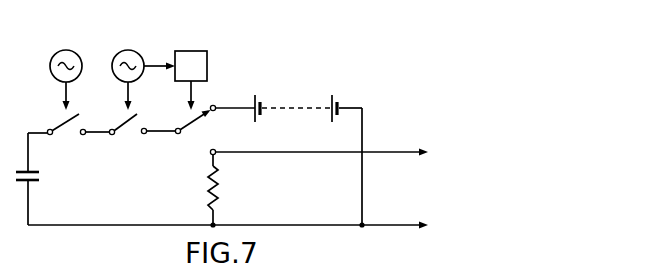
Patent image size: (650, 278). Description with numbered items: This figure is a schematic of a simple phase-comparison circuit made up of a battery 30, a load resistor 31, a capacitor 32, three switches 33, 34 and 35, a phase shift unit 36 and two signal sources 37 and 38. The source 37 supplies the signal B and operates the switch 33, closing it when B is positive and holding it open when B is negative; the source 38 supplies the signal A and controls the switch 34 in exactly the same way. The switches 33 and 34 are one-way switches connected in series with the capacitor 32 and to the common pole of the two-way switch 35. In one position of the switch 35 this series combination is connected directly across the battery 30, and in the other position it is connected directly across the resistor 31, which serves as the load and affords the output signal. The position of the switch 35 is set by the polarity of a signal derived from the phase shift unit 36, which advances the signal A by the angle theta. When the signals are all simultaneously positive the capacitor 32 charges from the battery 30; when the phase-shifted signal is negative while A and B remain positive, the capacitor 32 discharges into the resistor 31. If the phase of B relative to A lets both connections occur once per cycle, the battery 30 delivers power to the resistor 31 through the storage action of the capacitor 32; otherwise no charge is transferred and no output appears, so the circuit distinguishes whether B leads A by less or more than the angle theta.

The battery 30 is at (309, 99).
The resistor 31 is at (240, 193).
The capacitor 32 is at (61, 185).
The switch 33 is at (81, 152).
The switch 34 is at (141, 152).
The two-way switch 35 is at (204, 152).
The phase shift unit 36 is at (204, 44).
The signal source 37 is at (76, 44).
The signal source 38 is at (138, 44).